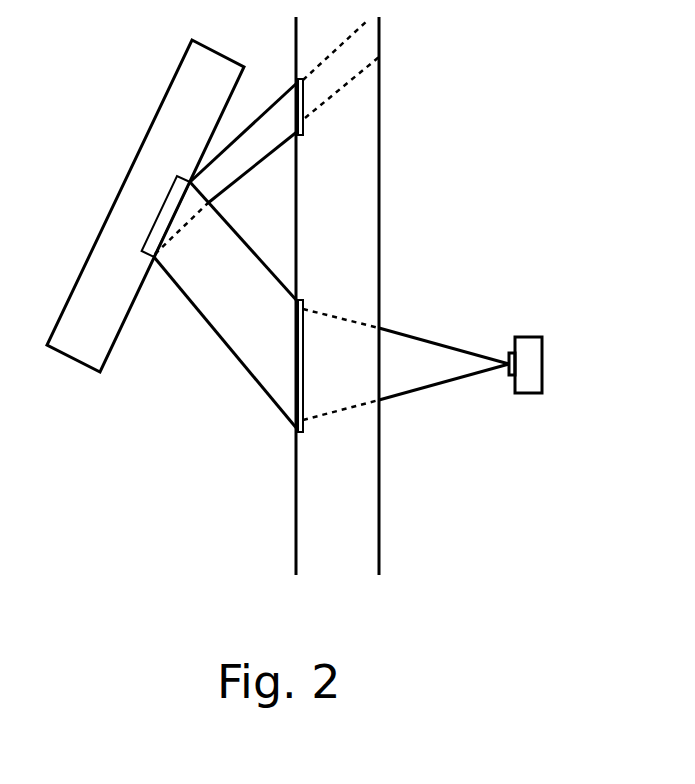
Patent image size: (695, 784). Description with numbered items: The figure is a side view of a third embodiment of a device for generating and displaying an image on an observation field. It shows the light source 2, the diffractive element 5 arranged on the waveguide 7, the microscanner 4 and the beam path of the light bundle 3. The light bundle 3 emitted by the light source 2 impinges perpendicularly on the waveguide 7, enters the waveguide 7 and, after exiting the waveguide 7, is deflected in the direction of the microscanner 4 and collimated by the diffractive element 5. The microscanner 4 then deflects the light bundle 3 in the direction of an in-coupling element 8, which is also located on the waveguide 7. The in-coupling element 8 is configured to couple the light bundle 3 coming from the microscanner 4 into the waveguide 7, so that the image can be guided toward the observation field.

The light source 2 is at (543, 363).
The light bundle 3 is at (404, 393).
The microscanner 4 is at (102, 227).
The diffractive element 5 is at (297, 427).
The waveguide 7 is at (379, 222).
The in-coupling element 8 is at (303, 128).